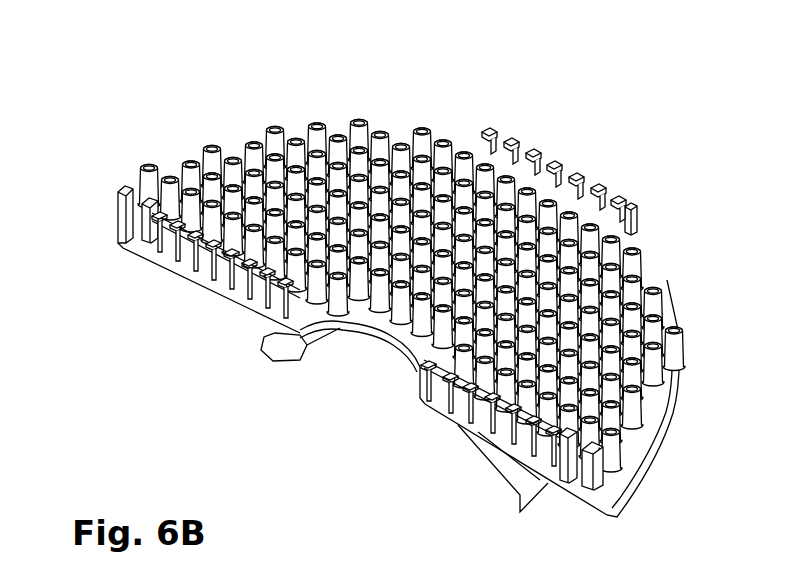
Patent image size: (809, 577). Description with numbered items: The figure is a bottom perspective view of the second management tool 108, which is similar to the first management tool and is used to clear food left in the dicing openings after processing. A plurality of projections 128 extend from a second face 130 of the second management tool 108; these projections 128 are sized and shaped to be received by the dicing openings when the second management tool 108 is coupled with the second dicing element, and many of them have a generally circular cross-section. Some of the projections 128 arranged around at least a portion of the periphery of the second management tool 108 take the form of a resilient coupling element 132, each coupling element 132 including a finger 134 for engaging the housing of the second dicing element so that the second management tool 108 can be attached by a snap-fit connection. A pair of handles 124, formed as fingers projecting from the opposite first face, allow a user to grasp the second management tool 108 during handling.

The second management tool 108 is at (428, 298).
The handles 124 is at (298, 357).
The projections 128 is at (657, 303).
The second face 130 is at (657, 414).
The resilient coupling element 132 is at (165, 233).
The finger 134 is at (258, 290).